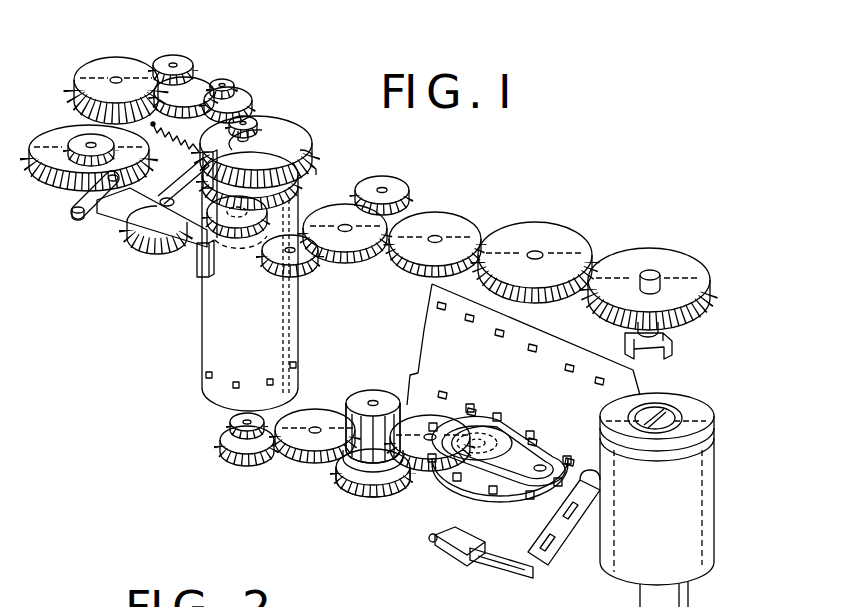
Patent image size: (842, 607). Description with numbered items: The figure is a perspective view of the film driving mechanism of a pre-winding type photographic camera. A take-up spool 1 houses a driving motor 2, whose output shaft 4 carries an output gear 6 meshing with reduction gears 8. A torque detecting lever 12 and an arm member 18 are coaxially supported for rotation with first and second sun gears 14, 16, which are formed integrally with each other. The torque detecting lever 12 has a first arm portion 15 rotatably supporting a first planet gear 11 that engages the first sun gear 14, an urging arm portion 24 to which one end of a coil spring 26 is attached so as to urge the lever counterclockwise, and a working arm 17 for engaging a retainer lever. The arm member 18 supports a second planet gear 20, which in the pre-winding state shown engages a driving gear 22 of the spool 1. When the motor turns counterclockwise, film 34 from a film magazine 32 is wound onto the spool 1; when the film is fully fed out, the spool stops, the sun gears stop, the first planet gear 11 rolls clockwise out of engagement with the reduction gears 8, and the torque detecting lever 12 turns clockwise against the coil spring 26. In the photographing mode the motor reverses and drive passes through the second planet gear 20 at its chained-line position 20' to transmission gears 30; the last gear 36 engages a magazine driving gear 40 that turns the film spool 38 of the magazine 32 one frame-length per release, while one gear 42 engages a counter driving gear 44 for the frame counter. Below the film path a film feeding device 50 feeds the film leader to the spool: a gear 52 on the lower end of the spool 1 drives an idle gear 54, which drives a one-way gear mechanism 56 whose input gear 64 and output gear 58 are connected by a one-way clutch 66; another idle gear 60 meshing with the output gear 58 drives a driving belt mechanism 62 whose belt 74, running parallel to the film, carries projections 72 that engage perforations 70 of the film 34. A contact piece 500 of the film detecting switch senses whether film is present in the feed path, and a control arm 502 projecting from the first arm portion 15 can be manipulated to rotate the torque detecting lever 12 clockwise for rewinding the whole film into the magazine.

The take-up spool 1 is at (300, 332).
The driving motor 2 is at (288, 133).
The output shaft 4 is at (270, 128).
The output gear 6 is at (258, 110).
The reduction gears 8 is at (150, 58).
The first planet gear 11 is at (68, 195).
The torque detecting lever 12 is at (118, 225).
The first sun gear 14 is at (137, 242).
The first arm portion 15 is at (112, 210).
The second sun gear 16 is at (165, 252).
The working arm 17 is at (197, 277).
The arm member 18 is at (298, 192).
The second planet gear 20 is at (237, 255).
The chained-line position of second planet gear 20' is at (248, 284).
The driving gear 22 is at (316, 150).
The urging arm portion 24 is at (318, 170).
The coil spring 26 is at (95, 138).
The transmission gears 30 is at (527, 208).
The film magazine 32 is at (600, 455).
The film 34 is at (553, 360).
The last gear 36 is at (573, 250).
The film spool 38 is at (668, 410).
The magazine driving gear 40 is at (675, 305).
The gear 42 is at (370, 245).
The counter driving gear 44 is at (405, 196).
The film feeding device 50 is at (363, 508).
The gear 52 is at (240, 460).
The idle gear 54 is at (290, 452).
The one-way gear mechanism 56 is at (400, 497).
The output gear 58 is at (368, 398).
The idle gear 60 is at (418, 445).
The driving belt mechanism 62 is at (478, 508).
The input gear 64 is at (345, 483).
The one-way clutch 66 is at (375, 462).
The perforations 70 is at (447, 382).
The projections 72 is at (553, 487).
The belt 74 is at (505, 487).
The contact piece 500 is at (612, 528).
The control arm 502 is at (72, 220).